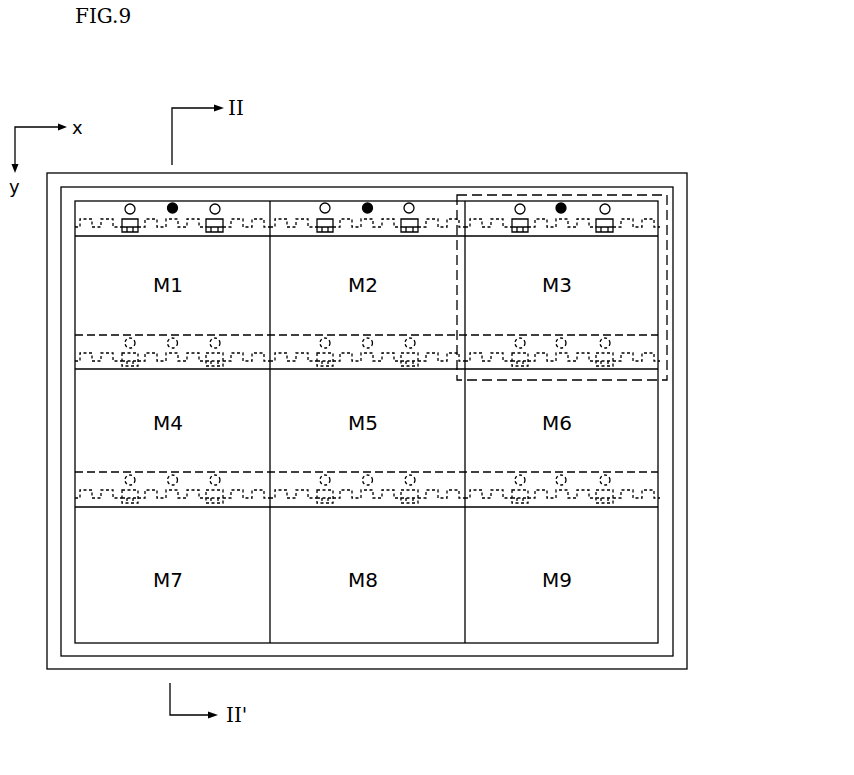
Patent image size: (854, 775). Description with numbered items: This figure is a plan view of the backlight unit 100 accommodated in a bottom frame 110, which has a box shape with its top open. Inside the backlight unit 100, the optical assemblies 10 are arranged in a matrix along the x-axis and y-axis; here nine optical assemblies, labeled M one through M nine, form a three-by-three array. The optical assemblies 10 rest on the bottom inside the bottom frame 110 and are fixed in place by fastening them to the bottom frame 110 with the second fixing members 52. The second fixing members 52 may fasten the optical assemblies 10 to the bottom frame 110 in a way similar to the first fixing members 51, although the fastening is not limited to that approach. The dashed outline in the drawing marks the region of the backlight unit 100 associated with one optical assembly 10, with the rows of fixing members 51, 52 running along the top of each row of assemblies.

The optical assembly 10 is at (617, 380).
The first fixing member 51 is at (411, 201).
The second fixing member 52 is at (176, 202).
The backlight unit 100 is at (612, 186).
The bottom frame 110 is at (540, 173).